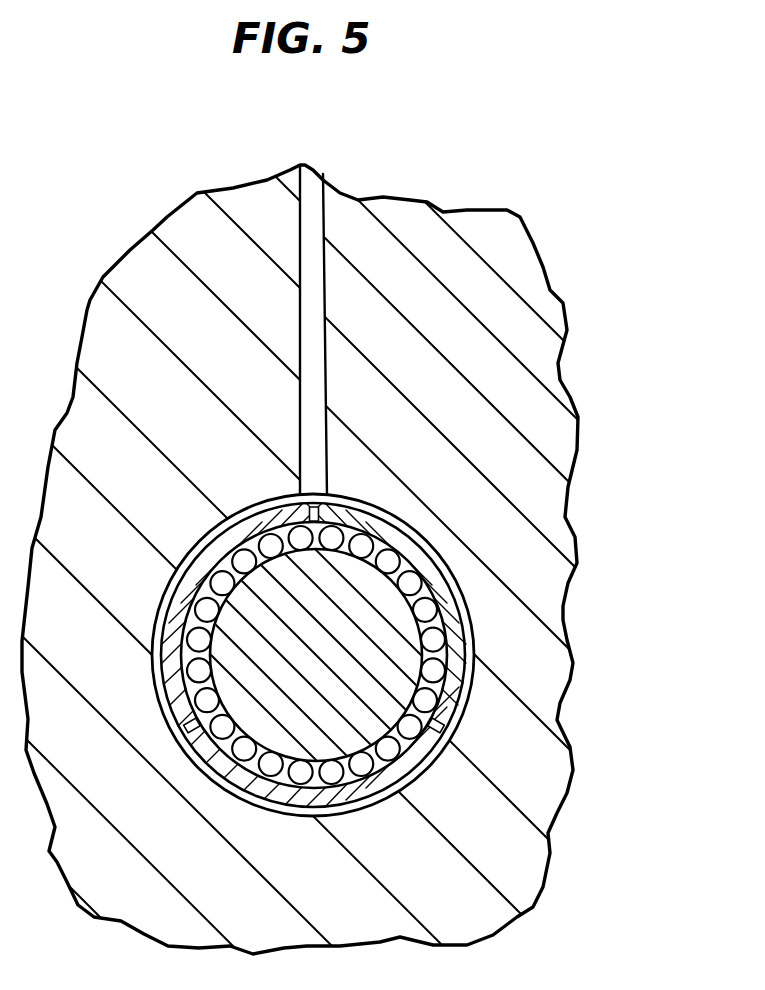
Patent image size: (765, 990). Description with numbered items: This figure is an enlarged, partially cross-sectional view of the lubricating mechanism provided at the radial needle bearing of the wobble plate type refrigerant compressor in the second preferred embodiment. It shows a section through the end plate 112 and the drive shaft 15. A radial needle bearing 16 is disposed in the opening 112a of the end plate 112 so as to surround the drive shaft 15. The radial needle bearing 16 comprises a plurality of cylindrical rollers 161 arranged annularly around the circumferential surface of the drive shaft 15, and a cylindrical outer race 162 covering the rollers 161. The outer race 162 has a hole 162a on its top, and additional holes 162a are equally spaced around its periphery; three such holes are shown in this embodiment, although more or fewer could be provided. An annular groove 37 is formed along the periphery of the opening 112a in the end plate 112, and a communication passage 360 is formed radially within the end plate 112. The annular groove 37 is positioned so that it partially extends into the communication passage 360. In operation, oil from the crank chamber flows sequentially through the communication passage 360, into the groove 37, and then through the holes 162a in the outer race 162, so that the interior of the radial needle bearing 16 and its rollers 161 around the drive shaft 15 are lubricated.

The end plate 112 is at (545, 303).
The opening 112a is at (380, 790).
The communication passage 360 is at (313, 277).
The radial needle bearing 16 is at (382, 612).
The annular groove 37 is at (452, 585).
The outer race 162 is at (453, 673).
The hole 162a is at (316, 512).
The cylindrical rollers 161 is at (435, 633).
The drive shaft 15 is at (290, 747).